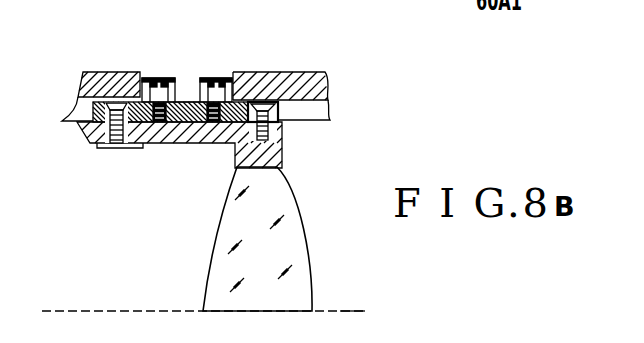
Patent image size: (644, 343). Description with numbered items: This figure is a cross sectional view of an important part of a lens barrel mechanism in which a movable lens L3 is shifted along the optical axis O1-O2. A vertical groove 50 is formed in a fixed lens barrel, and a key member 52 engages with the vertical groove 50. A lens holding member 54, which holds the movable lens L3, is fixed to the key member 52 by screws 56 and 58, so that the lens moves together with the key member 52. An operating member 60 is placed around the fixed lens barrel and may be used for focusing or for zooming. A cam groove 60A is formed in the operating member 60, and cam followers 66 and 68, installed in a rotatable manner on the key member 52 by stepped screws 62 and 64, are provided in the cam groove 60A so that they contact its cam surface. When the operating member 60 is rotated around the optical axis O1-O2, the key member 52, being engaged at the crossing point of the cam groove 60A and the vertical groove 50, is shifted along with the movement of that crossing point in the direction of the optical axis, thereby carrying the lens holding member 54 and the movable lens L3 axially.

The vertical groove 50 is at (317, 110).
The key member 52 is at (143, 148).
The lens holding member 54 is at (178, 145).
The screw 56 is at (97, 148).
The screw 58 is at (284, 138).
The operating member 60 is at (284, 72).
The cam groove 60A is at (187, 88).
The stepped screw 62 is at (227, 77).
The stepped screw 64 is at (160, 77).
The cam follower 66 is at (233, 76).
The cam follower 68 is at (140, 71).
The movable lens L3 is at (302, 275).
The optical axis end point O1 is at (191, 312).
The optical axis end point O2 is at (368, 312).